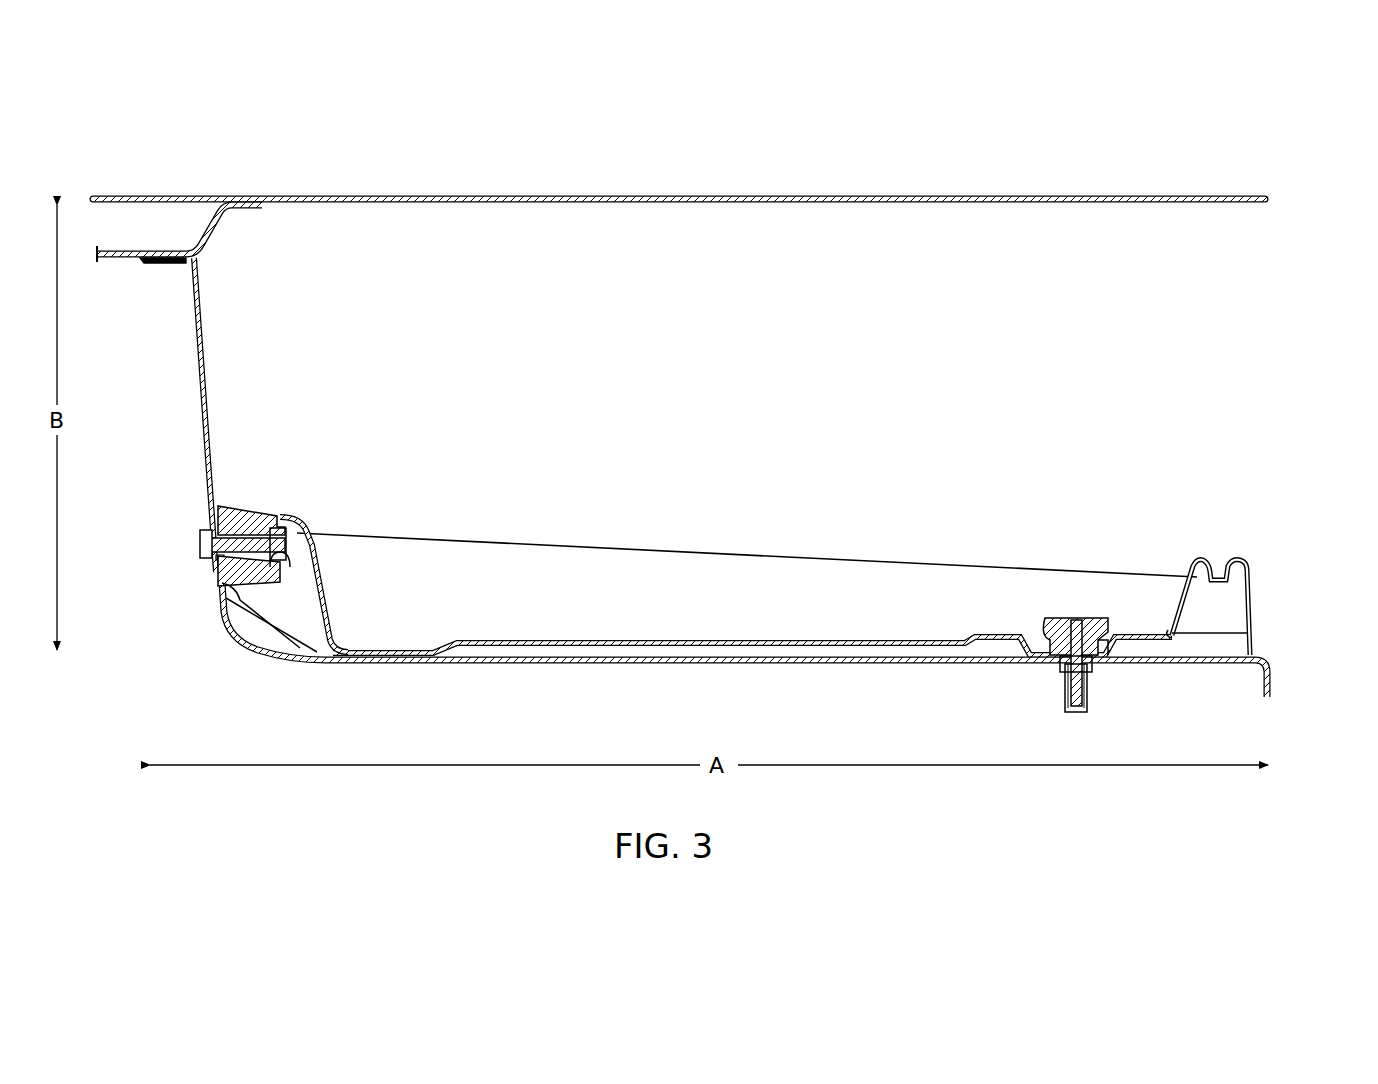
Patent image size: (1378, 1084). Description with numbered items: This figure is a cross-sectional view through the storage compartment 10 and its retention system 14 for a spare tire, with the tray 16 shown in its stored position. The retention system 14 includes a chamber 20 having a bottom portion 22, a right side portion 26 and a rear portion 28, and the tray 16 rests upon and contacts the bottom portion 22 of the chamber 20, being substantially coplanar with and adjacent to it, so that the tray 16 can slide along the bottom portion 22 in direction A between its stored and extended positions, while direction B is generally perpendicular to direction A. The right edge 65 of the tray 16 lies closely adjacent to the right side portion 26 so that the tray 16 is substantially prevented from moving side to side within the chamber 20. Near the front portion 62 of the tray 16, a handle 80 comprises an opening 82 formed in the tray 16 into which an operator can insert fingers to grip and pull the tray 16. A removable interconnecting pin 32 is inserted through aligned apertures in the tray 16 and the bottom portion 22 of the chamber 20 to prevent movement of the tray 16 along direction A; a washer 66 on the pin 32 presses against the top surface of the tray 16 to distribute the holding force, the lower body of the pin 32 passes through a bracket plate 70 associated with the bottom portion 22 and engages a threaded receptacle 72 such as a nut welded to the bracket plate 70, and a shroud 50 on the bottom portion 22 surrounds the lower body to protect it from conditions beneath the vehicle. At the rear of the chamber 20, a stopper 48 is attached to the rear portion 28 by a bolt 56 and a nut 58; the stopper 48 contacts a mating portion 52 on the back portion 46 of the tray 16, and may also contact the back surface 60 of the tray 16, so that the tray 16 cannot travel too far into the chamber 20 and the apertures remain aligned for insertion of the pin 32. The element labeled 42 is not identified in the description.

The storage compartment 10 is at (1235, 244).
The retention system 14 is at (1218, 488).
The tray 16 is at (1280, 604).
The chamber 20 is at (1205, 357).
The bottom portion 22 is at (840, 664).
The right side portion 26 is at (771, 381).
The rear portion 28 is at (204, 326).
The pin 32 is at (1073, 592).
The nut block 42 is at (1046, 622).
The back portion 46 is at (300, 545).
The stopper 48 is at (220, 565).
The shroud 50 is at (1062, 703).
The mating portion 52 is at (280, 565).
The bolt 56 is at (286, 528).
The nut 58 is at (205, 540).
The back surface 60 is at (228, 594).
The front portion 62 is at (1258, 542).
The right edge 65 is at (752, 618).
The washer 66 is at (1106, 652).
The bracket plate 70 is at (1094, 660).
The threaded receptacle 72 is at (1060, 669).
The handle 80 is at (1197, 545).
The opening 82 is at (1175, 597).